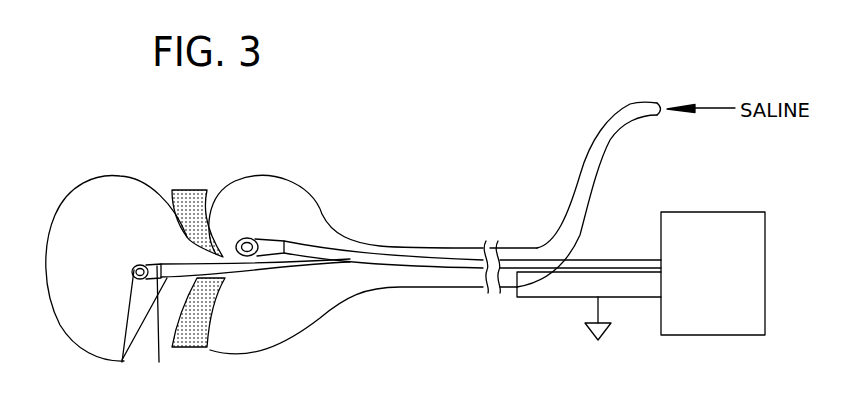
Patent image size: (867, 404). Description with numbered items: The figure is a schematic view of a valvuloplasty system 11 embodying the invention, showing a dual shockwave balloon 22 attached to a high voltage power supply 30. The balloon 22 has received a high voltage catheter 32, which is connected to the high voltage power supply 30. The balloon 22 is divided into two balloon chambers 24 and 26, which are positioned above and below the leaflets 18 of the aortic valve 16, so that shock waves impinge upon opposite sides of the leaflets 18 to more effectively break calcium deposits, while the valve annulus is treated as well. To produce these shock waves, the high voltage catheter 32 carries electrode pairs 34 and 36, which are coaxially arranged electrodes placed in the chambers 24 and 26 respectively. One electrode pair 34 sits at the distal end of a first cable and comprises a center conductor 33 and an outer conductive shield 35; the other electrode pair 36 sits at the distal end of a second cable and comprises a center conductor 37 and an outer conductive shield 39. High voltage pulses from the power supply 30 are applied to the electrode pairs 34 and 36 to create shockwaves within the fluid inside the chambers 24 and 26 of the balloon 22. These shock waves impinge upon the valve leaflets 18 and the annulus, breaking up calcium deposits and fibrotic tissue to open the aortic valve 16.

The valvuloplasty system 11 is at (513, 88).
The aortic valve 16 is at (163, 187).
The leaflets 18 is at (170, 216).
The dual shockwave balloon 22 is at (263, 170).
The balloon chamber 24 is at (253, 190).
The balloon chamber 26 is at (90, 334).
The high voltage power supply 30 is at (698, 212).
The high voltage catheter 32 is at (440, 260).
The center conductor 33 is at (122, 362).
The electrode pair 34 is at (267, 233).
The outer conductive shield 35 is at (159, 362).
The electrode pair 36 is at (123, 267).
The center conductor 37 is at (237, 238).
The outer conductive shield 39 is at (258, 241).